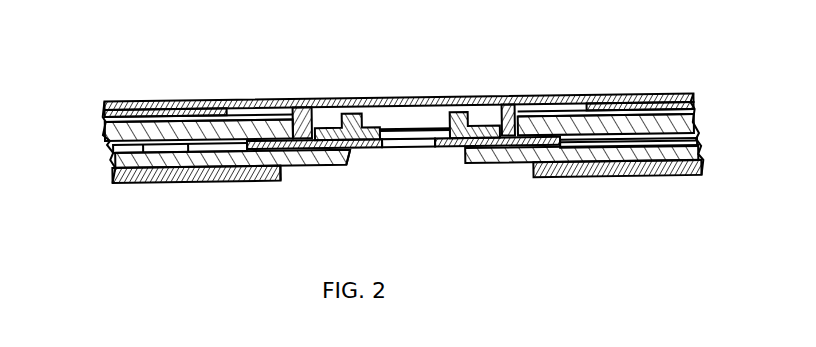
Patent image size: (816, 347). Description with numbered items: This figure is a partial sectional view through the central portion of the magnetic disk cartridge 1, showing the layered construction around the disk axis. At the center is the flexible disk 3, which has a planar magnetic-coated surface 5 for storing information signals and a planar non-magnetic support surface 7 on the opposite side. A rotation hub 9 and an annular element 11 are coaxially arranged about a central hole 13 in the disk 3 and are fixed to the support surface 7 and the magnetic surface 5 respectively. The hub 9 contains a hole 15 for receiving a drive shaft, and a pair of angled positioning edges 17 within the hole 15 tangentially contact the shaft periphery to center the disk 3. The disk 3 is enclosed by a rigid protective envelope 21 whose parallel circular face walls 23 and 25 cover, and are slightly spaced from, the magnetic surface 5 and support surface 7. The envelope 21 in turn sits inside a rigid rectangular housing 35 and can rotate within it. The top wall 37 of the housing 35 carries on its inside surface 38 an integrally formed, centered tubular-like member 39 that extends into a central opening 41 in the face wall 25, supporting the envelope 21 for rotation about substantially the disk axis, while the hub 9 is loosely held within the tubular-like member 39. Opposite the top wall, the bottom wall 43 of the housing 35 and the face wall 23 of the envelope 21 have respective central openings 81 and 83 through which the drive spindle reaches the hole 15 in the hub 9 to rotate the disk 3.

The magnetic disk cartridge 1 is at (93, 146).
The flexible disk 3 is at (140, 181).
The magnetic-coated surface 5 is at (187, 152).
The non-magnetic support surface 7 is at (228, 172).
The rotation hub 9 is at (343, 108).
The annular element 11 is at (357, 151).
The central hole 13 is at (427, 148).
The hole 15 is at (414, 123).
The angled positioning edges 17 is at (411, 136).
The protective envelope 21 is at (99, 128).
The face wall 23 is at (342, 168).
The face wall 25 is at (149, 121).
The housing 35 is at (130, 99).
The top wall 37 is at (207, 101).
The inside surface 38 is at (421, 104).
The tubular-like member 39 is at (322, 119).
The central opening 41 is at (295, 107).
The bottom wall 43 is at (272, 179).
The central opening 81 is at (510, 172).
The central opening 83 is at (455, 158).